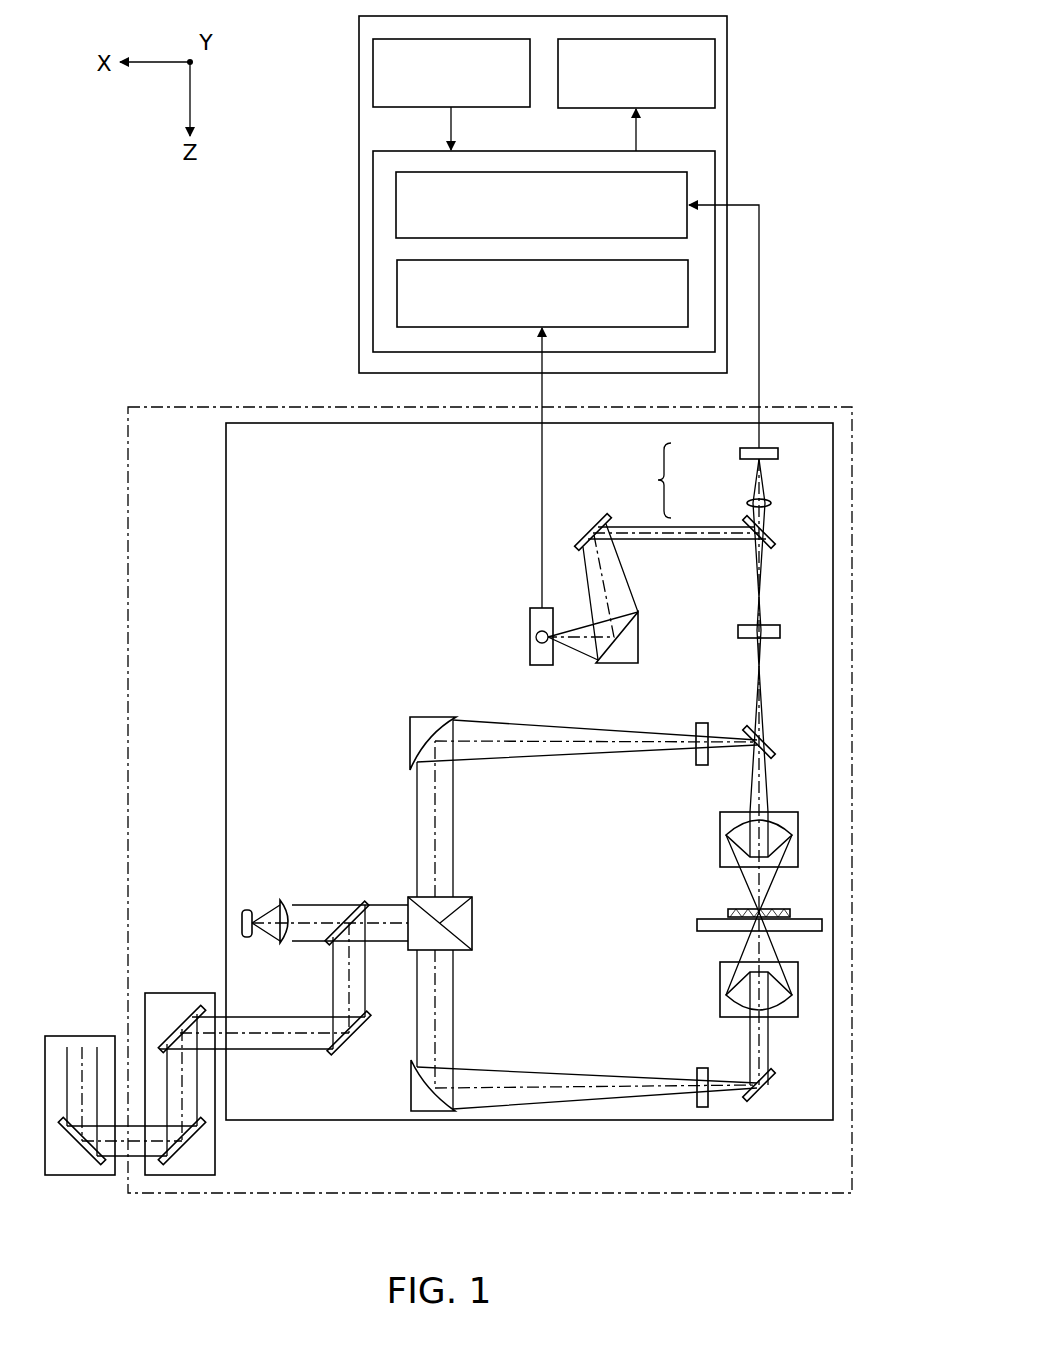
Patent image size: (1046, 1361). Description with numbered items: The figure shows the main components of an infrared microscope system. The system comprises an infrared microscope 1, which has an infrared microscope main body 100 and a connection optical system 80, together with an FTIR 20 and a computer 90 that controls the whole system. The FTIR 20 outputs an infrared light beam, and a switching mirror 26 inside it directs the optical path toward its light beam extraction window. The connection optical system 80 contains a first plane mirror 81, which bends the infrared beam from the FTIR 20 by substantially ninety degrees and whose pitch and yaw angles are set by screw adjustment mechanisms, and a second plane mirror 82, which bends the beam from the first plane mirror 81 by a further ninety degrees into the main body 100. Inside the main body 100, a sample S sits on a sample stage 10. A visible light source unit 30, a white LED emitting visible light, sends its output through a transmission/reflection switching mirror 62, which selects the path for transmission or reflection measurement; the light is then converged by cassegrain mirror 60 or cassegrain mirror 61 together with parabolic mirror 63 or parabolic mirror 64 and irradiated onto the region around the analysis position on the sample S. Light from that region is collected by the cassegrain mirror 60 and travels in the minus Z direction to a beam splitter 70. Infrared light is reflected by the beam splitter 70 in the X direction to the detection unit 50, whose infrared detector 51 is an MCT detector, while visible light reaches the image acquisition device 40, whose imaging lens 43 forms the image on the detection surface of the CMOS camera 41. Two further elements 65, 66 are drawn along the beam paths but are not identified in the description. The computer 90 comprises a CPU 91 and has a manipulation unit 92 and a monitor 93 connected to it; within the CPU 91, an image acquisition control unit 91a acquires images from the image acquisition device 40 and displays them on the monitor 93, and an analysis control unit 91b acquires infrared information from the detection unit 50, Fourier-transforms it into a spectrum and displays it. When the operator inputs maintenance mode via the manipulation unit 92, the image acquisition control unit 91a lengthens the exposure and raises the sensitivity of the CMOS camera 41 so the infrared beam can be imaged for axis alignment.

The infrared microscope 1 is at (186, 407).
The sample stage 10 is at (697, 925).
The FTIR 20 is at (80, 1036).
The switching mirror 26 is at (75, 1152).
The visible light source unit 30 is at (247, 909).
The image acquisition device 40 is at (700, 482).
The CMOS camera 41 is at (740, 452).
The imaging lens 43 is at (748, 503).
The detection unit 50 is at (526, 636).
The infrared detector 51 is at (530, 637).
The cassegrain mirror 60 is at (720, 840).
The cassegrain mirror 61 is at (720, 988).
The transmission/reflection switching mirror 62 is at (472, 922).
The parabolic mirror 63 is at (424, 1111).
The parabolic mirror 64 is at (410, 740).
The aperture 65 is at (703, 723).
The pinhole 66 is at (775, 625).
The beam splitter 70 is at (774, 524).
The connection optical system 80 is at (215, 1150).
The first plane mirror 81 is at (196, 1160).
The second plane mirror 82 is at (196, 1010).
The computer 90 is at (727, 135).
The CPU 91 is at (715, 250).
The image acquisition control unit 91a is at (396, 205).
The analysis control unit 91b is at (397, 292).
The manipulation unit 92 is at (373, 70).
The monitor 93 is at (715, 75).
The infrared microscope main body 100 is at (282, 423).
The sample S is at (733, 909).